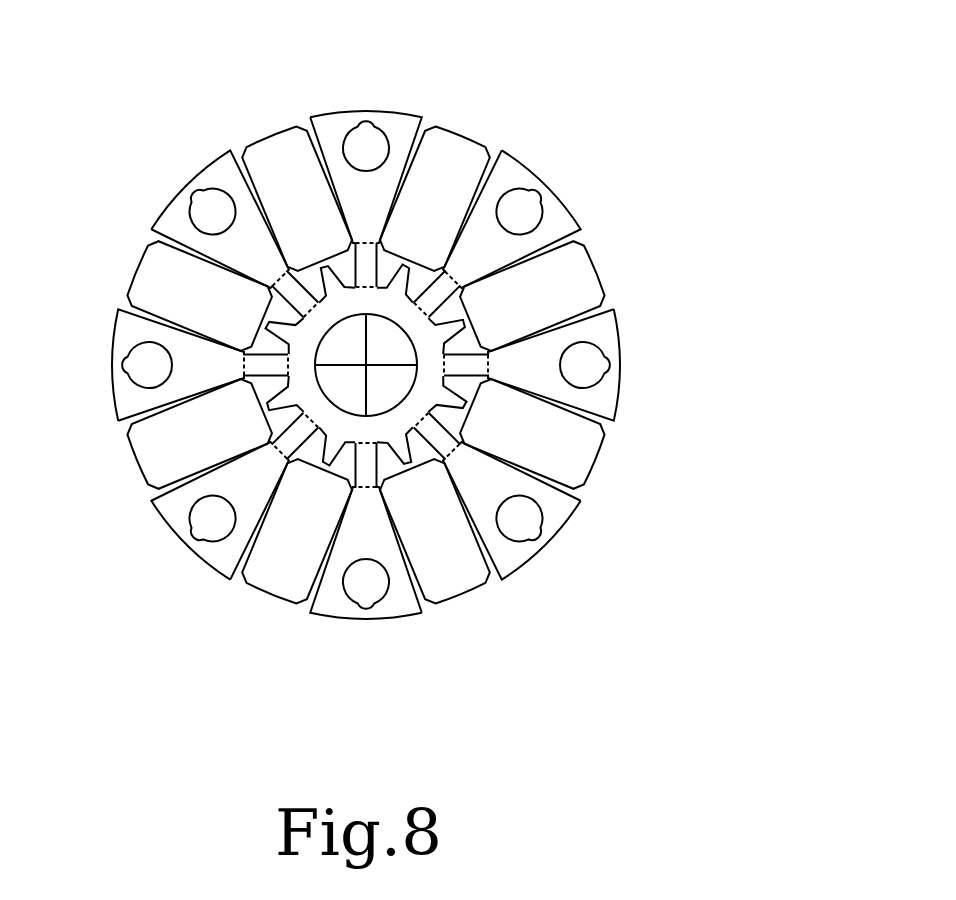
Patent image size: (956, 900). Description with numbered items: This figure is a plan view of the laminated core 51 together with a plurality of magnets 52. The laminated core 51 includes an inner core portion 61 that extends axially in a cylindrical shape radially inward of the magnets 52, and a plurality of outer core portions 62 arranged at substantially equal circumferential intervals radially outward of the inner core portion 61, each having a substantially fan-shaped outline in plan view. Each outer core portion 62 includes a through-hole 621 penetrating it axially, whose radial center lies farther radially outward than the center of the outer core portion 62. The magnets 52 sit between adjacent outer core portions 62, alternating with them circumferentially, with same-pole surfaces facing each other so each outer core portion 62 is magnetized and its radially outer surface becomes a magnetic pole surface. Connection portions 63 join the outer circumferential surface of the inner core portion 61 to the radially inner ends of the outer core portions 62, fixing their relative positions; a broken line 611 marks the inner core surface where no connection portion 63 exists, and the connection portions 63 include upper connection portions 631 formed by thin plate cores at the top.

The laminated core 51 is at (366, 156).
The magnets 52 is at (285, 185).
The inner core portion 61 is at (373, 300).
The outer core portions 62 is at (413, 140).
The connection portions 63 is at (446, 421).
The broken line 611 is at (273, 297).
The through-hole 621 is at (520, 212).
The upper connection portions 631 is at (435, 433).